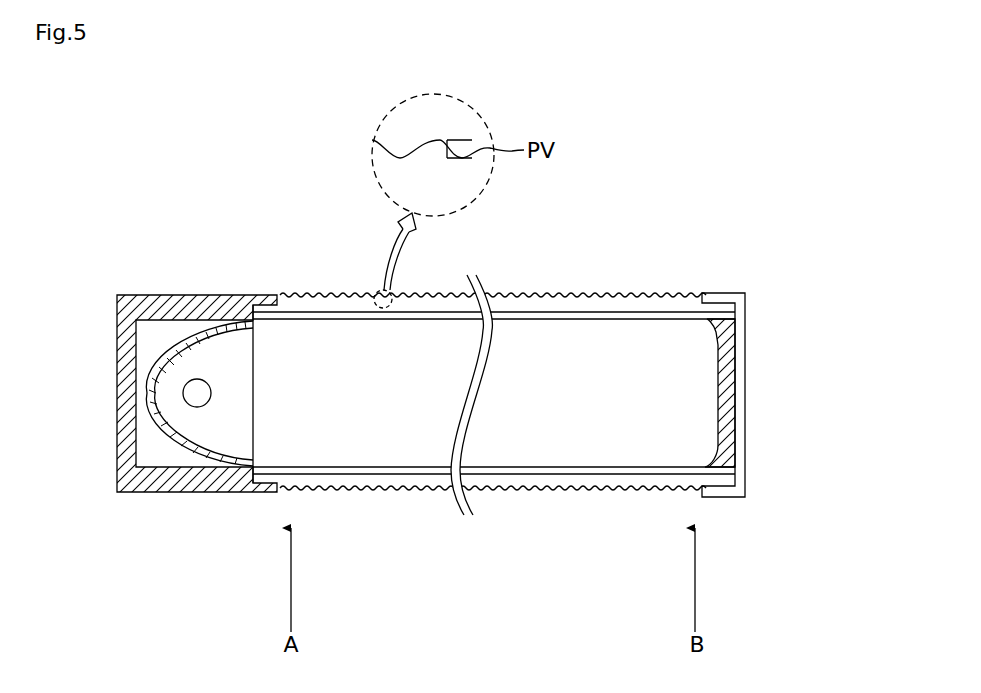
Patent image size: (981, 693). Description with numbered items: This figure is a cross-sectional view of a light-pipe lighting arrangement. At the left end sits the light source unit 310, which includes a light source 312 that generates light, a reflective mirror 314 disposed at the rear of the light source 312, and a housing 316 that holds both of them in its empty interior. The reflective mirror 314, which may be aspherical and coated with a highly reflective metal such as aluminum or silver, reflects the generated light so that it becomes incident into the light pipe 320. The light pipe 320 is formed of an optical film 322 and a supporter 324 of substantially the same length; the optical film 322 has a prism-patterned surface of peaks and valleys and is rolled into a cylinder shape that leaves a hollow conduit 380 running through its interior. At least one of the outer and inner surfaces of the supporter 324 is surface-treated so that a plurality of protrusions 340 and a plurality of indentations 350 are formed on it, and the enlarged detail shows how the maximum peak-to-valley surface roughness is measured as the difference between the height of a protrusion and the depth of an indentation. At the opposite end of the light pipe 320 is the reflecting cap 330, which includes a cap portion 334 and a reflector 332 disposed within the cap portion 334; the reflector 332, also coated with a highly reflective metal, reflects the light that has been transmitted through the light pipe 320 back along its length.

The light source unit 310 is at (193, 466).
The light source 312 is at (200, 398).
The reflective mirror 314 is at (190, 457).
The housing 316 is at (132, 480).
The light pipe 320 is at (494, 340).
The optical film 322 is at (588, 308).
The supporter 324 is at (590, 236).
The reflecting cap 330 is at (811, 395).
The reflector 332 is at (728, 395).
The cap portion 334 is at (740, 440).
The protrusions 340 is at (378, 138).
The indentations 350 is at (400, 165).
The hollow conduit 380 is at (565, 443).